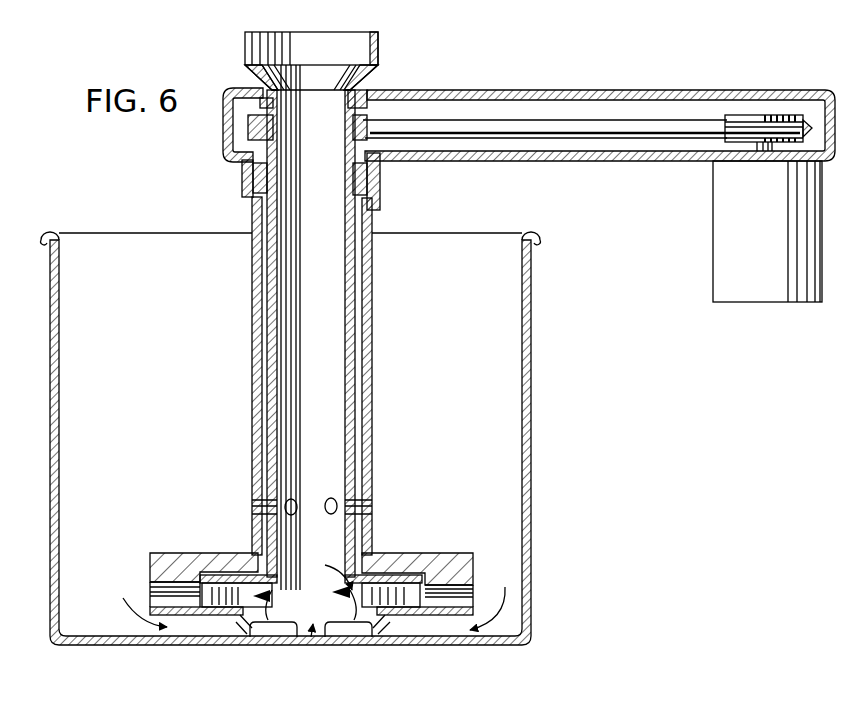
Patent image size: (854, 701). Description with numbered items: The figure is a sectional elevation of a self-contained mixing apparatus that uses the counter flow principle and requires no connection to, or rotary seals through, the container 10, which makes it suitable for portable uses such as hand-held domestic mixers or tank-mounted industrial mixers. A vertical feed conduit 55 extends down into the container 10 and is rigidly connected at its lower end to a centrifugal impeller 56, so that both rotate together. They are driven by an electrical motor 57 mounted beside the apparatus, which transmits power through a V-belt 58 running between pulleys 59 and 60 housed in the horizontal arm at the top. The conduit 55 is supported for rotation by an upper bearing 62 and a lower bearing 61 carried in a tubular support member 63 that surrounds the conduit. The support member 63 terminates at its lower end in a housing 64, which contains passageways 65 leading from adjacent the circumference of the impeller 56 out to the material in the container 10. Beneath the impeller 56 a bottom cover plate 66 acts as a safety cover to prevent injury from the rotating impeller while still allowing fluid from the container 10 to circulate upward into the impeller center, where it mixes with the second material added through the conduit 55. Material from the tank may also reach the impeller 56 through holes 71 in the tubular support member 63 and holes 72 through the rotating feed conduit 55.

The container 10 is at (530, 447).
The conduit 55 is at (350, 388).
The impeller 56 is at (227, 577).
The electrical motor 57 is at (730, 243).
The V-belt 58 is at (572, 128).
The pulley 59 is at (766, 116).
The pulley 60 is at (413, 92).
The bearing 61 is at (372, 183).
The bearing 62 is at (372, 90).
The tubular support member 63 is at (368, 342).
The housing 64 is at (458, 553).
The passageways 65 is at (166, 586).
The bottom cover plate 66 is at (418, 610).
The holes 71 is at (368, 508).
The holes 72 is at (345, 500).